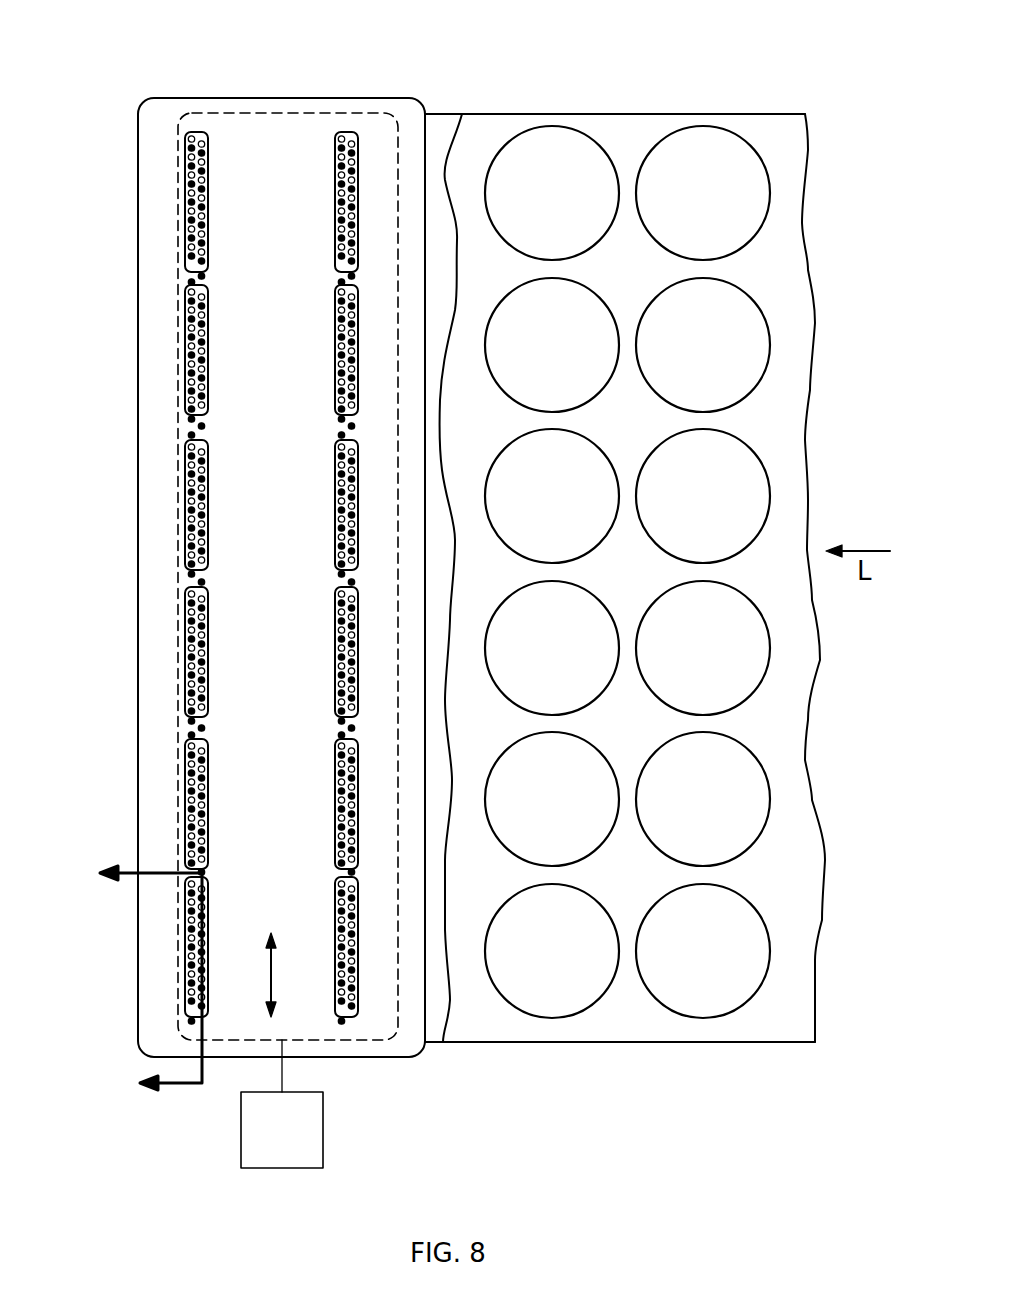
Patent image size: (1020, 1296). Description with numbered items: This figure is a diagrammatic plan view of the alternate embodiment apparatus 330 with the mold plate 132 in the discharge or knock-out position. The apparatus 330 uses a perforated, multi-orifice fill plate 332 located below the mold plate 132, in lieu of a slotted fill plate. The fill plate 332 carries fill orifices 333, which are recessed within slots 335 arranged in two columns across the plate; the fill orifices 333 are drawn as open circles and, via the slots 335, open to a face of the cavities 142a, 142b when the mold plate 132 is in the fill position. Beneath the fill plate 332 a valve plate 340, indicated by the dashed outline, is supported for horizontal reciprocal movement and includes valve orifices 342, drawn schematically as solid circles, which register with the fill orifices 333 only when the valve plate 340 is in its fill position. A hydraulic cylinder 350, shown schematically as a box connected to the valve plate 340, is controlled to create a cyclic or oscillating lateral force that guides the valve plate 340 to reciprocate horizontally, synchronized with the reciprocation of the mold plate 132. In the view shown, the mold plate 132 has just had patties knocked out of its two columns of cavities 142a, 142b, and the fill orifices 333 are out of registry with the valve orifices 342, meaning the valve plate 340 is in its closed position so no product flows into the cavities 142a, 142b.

The apparatus 330 is at (414, 598).
The fill plate 332 is at (138, 930).
The fill orifices 333 is at (187, 215).
The slots 335 is at (192, 474).
The valve plate 340 is at (180, 603).
The valve orifices 342 is at (185, 302).
The hydraulic cylinder 350 is at (307, 1148).
The mold plate 132 is at (808, 727).
The cavity 142a is at (726, 1010).
The cavity 142b is at (563, 1010).